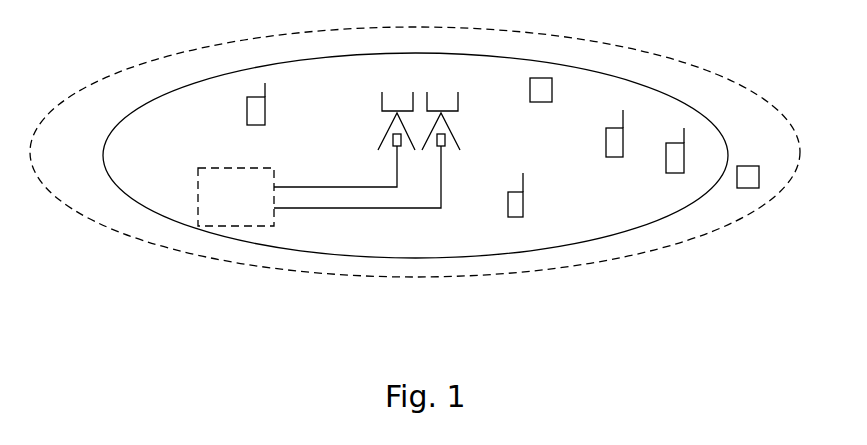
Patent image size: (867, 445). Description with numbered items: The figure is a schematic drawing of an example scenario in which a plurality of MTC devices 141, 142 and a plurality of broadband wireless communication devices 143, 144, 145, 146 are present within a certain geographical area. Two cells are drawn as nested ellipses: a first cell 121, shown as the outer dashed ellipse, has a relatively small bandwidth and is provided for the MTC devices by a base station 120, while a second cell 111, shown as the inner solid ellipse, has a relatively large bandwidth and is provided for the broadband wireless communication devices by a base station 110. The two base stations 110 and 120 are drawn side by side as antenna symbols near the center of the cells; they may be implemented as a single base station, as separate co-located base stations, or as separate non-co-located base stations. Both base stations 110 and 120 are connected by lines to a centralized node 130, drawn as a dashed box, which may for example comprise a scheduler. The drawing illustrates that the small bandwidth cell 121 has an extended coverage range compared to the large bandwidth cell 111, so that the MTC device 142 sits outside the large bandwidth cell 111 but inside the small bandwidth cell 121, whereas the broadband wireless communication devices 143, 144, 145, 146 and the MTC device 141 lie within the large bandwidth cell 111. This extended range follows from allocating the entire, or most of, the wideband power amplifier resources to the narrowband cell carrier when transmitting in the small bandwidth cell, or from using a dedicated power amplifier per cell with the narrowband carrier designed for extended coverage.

The base station 110 is at (393, 140).
The base station 120 is at (446, 140).
The centralized node 130 is at (236, 197).
The second cell 111 is at (582, 66).
The first cell 121 is at (675, 58).
The MTC device 141 is at (552, 86).
The MTC device 142 is at (746, 166).
The broadband wireless communication device 143 is at (523, 208).
The broadband wireless communication device 144 is at (623, 141).
The broadband wireless communication device 145 is at (662, 175).
The broadband wireless communication device 146 is at (265, 108).